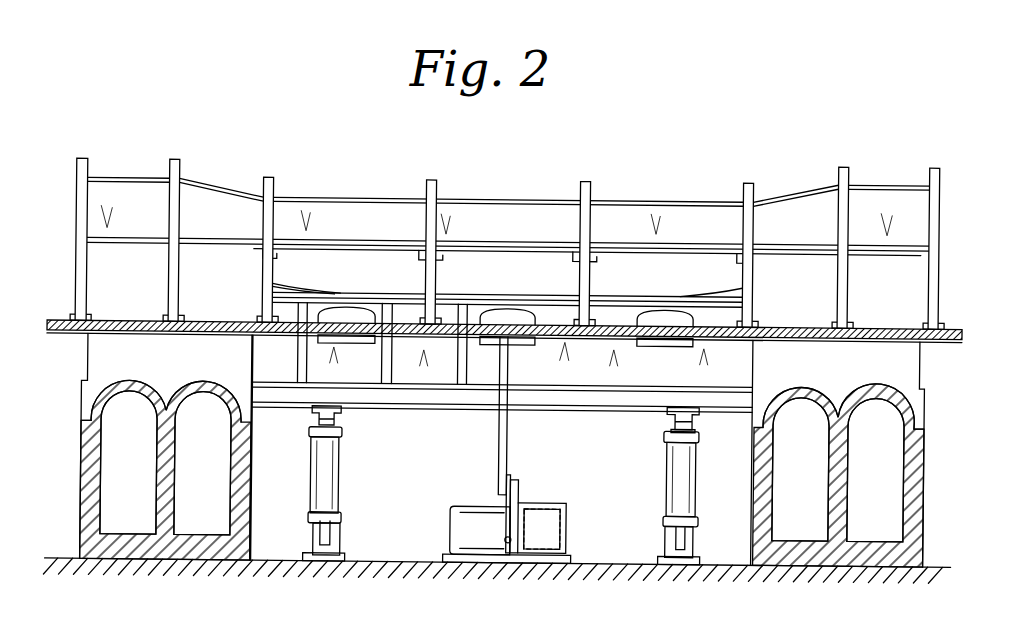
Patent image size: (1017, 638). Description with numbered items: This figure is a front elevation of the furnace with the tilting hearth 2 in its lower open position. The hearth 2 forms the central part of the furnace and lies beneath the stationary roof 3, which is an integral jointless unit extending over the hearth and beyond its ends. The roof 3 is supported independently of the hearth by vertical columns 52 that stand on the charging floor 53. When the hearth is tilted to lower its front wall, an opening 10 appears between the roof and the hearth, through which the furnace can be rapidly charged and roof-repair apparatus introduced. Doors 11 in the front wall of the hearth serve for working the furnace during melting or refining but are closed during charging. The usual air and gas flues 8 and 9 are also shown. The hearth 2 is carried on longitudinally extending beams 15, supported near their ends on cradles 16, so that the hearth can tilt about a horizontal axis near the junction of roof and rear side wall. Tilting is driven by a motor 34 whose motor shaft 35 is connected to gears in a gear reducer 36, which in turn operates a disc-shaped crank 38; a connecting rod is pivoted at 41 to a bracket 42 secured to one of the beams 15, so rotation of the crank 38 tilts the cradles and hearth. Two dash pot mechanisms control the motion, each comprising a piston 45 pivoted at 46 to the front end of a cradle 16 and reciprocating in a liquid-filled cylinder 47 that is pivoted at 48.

The tilting hearth 2 is at (293, 287).
The stationary roof 3 is at (483, 204).
The air and gas flue 8 is at (158, 476).
The air and gas flue 9 is at (230, 478).
The opening 10 is at (507, 283).
The door 11 is at (513, 310).
The longitudinally extending beam 15 is at (466, 396).
The cradle 16 is at (697, 416).
The motor 34 is at (462, 521).
The motor shaft 35 is at (509, 538).
The gear reducer 36 is at (560, 533).
The crank 38 is at (520, 490).
The pivot 41 is at (508, 473).
The bracket 42 is at (508, 425).
The piston 45 is at (337, 417).
The pivot 46 is at (668, 420).
The cylinder 47 is at (340, 472).
The pivot 48 is at (338, 533).
The column 52 is at (175, 167).
The charging floor 53 is at (47, 325).